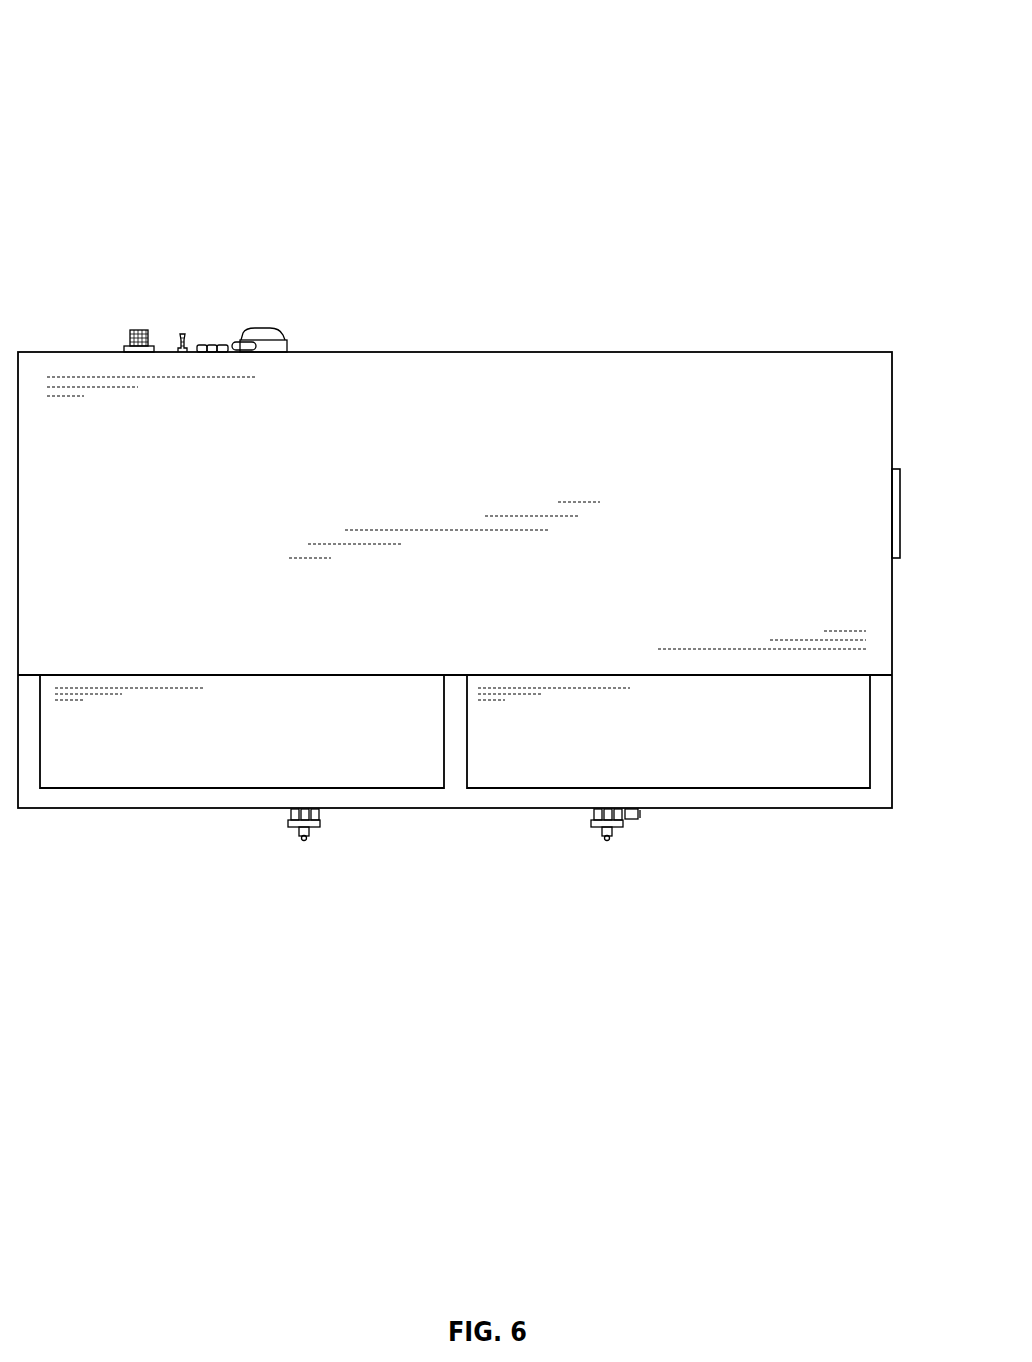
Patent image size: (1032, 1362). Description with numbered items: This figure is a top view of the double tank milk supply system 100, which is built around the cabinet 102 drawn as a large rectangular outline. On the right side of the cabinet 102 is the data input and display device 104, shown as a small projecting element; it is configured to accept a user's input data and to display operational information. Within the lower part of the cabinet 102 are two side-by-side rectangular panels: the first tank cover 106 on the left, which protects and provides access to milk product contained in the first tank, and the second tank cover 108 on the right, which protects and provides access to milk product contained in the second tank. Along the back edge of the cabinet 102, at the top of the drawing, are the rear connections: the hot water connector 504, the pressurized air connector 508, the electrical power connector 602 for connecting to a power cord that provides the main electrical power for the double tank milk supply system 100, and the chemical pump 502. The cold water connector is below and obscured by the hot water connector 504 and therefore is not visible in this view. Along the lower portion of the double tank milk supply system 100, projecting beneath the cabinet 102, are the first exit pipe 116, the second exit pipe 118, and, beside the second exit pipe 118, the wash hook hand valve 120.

The double tank milk supply system 100 is at (800, 84).
The cabinet 102 is at (523, 298).
The data input and display device 104 is at (903, 505).
The first tank cover 106 is at (180, 757).
The second tank cover 108 is at (760, 757).
The first exit pipe 116 is at (305, 834).
The second exit pipe 118 is at (602, 835).
The wash hook hand valve 120 is at (635, 822).
The chemical pump 502 is at (280, 329).
The hot water connector 504 is at (135, 330).
The pressurized air connector 508 is at (182, 335).
The electrical power connector 602 is at (207, 346).